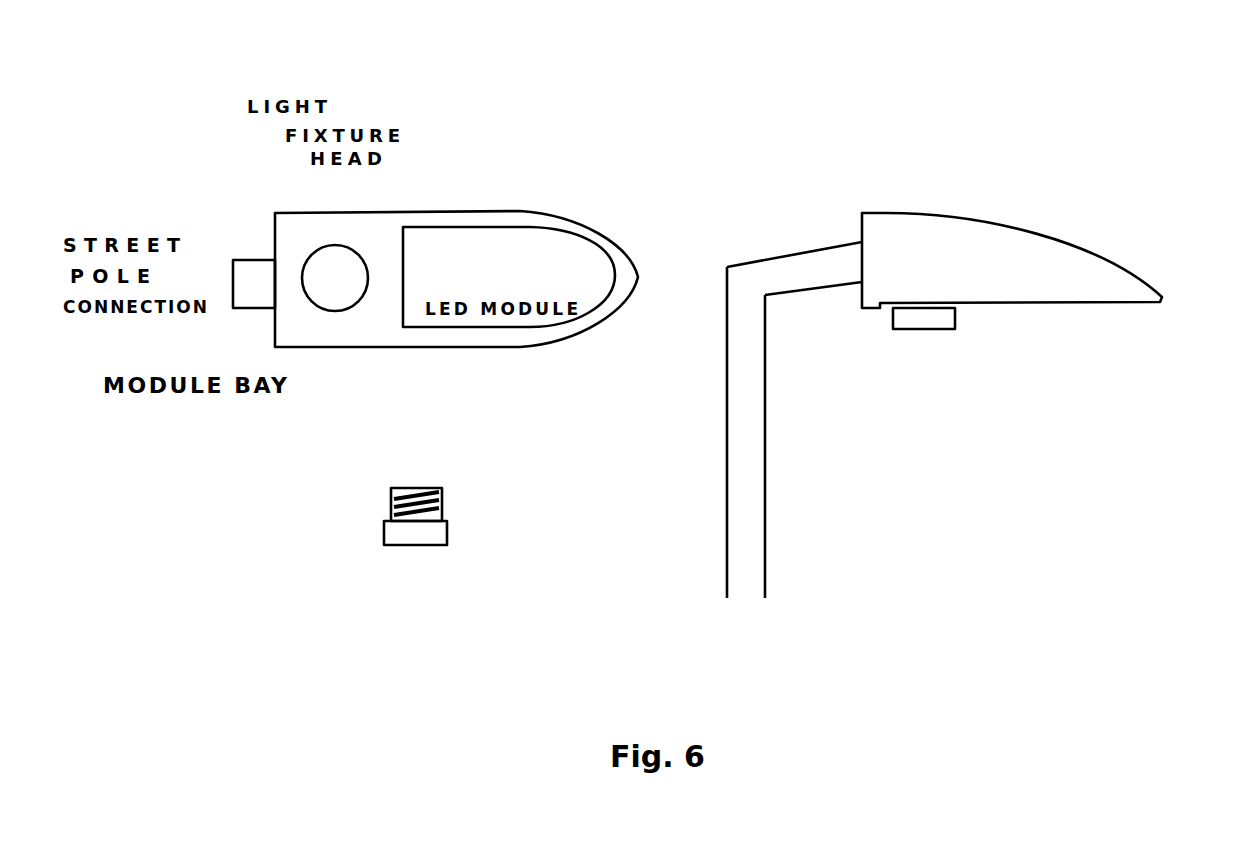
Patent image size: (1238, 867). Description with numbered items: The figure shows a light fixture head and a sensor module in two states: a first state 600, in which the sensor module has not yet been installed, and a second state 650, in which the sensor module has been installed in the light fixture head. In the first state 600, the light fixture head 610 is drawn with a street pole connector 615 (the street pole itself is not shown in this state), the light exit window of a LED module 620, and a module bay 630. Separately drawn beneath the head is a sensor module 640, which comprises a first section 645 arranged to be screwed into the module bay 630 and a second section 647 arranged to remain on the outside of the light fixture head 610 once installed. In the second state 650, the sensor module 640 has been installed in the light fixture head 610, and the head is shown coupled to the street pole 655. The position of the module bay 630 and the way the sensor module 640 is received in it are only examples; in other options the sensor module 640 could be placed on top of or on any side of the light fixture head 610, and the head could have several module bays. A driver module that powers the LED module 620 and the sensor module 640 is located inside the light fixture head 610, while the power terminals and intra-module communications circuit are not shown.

The first state 600 is at (386, 196).
The light fixture head 610 is at (332, 205).
The street pole connector 615 is at (253, 248).
The LED module 620 is at (835, 230).
The module bay 630 is at (210, 358).
The sensor module 640 is at (659, 426).
The first section 645 is at (365, 498).
The second section 647 is at (367, 533).
The second state 650 is at (933, 322).
The street pole 655 is at (778, 462).